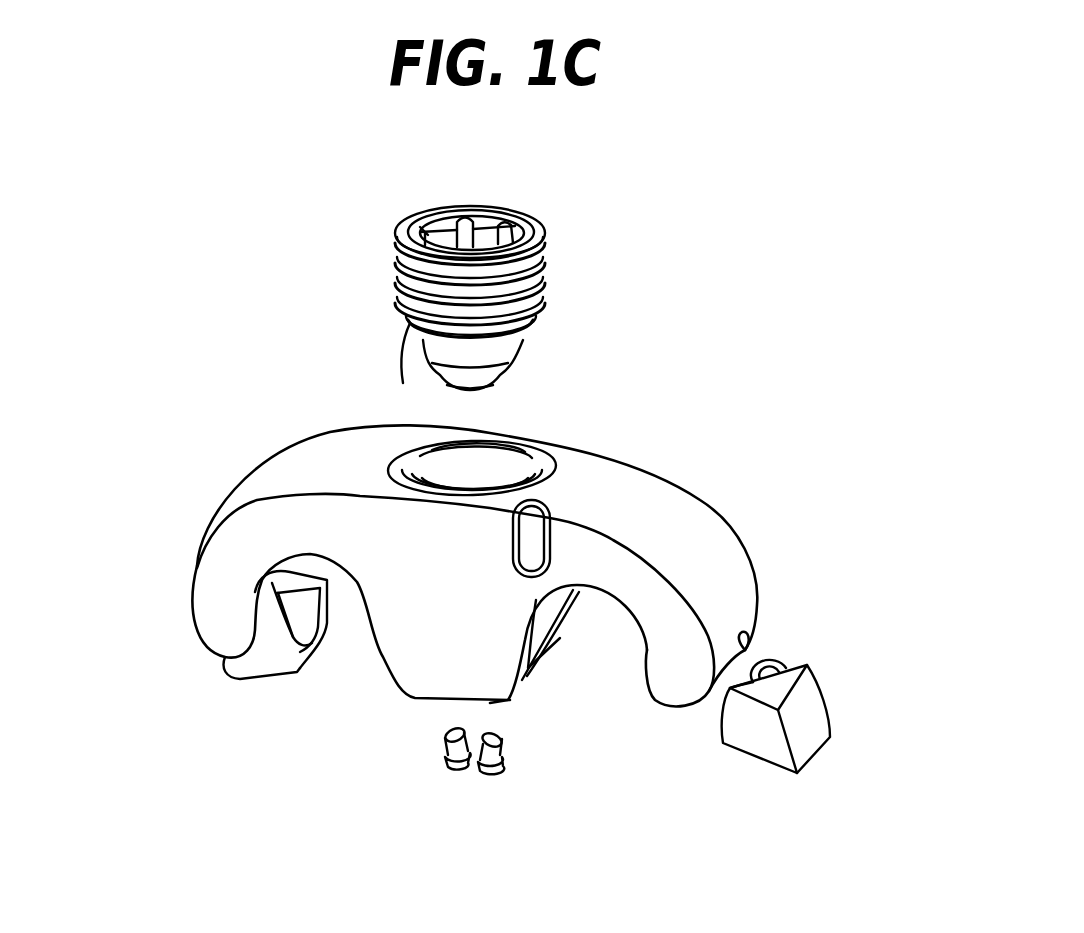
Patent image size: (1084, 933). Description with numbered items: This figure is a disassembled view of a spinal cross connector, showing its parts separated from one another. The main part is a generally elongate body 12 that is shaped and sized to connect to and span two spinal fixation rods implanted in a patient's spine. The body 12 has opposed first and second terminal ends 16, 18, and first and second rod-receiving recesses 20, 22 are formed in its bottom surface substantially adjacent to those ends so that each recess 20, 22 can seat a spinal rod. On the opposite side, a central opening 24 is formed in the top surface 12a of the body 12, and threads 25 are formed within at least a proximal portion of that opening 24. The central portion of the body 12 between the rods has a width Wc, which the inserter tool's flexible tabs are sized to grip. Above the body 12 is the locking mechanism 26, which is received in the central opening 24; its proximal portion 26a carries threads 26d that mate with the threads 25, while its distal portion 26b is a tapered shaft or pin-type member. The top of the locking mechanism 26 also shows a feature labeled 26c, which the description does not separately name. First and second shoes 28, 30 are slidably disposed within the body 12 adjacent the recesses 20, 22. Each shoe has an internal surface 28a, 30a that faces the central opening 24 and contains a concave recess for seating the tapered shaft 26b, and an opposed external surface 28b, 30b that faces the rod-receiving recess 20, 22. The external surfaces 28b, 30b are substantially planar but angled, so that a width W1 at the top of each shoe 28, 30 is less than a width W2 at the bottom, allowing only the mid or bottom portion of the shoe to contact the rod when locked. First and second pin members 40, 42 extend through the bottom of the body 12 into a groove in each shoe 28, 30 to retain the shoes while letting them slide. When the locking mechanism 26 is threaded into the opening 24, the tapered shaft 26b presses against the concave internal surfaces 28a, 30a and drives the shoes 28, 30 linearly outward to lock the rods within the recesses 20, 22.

The elongate body 12 is at (700, 513).
The top surface 12a is at (585, 500).
The first terminal end 16 is at (150, 600).
The second terminal end 18 is at (843, 557).
The first rod-receiving recess 20 is at (350, 640).
The second rod-receiving recess 22 is at (623, 653).
The central opening 24 is at (500, 480).
The threads 25 is at (537, 467).
The locking mechanism 26 is at (352, 217).
The proximal portion 26a is at (593, 230).
The distal portion 26b is at (530, 335).
The drive recess of set screw 26c is at (493, 213).
The threads 26d is at (404, 371).
The first shoe 28 is at (257, 667).
The internal surface 28a is at (300, 607).
The external surface 28b is at (217, 663).
The second shoe 30 is at (753, 755).
The internal surface 30a is at (764, 672).
The external surface 30b is at (810, 717).
The first pin member 40 is at (453, 770).
The second pin member 42 is at (487, 772).
The width of the central portion Wc is at (407, 432).
The width at top portion of shoe W1 is at (777, 710).
The width at bottom portion of shoe W2 is at (787, 757).